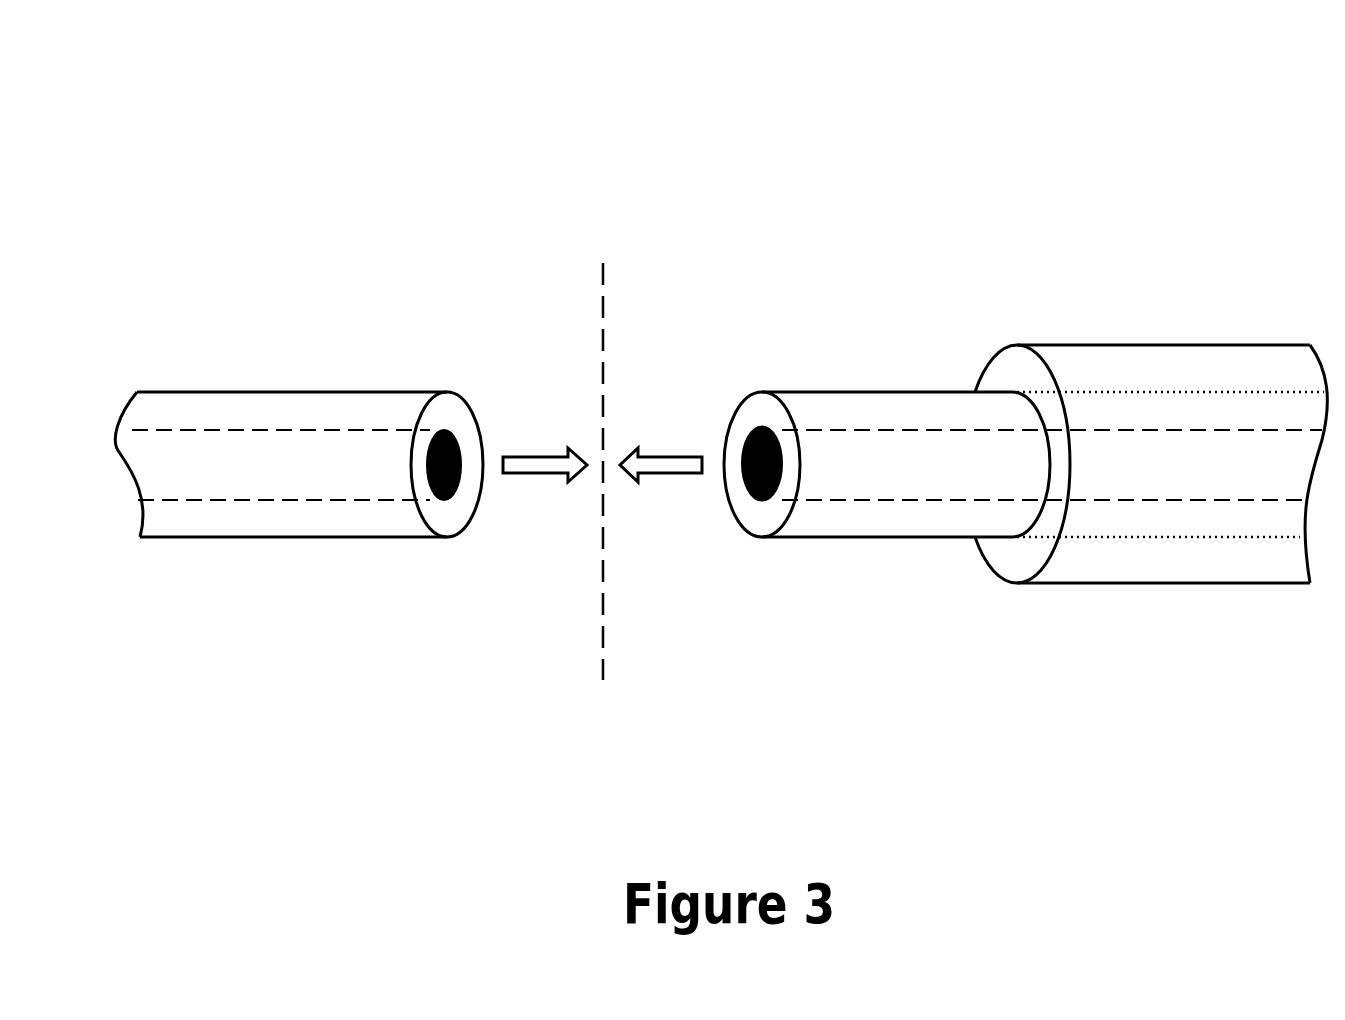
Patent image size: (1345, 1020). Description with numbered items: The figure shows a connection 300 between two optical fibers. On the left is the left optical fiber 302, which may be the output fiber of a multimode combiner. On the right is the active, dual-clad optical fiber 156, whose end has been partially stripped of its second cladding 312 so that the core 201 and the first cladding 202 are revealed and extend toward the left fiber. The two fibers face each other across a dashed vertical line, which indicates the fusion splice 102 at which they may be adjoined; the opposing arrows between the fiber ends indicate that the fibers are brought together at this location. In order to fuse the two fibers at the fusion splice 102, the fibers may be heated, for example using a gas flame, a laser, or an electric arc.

The connection 300 is at (216, 41).
The fusion splice 102 is at (600, 249).
The left optical fiber 302 is at (343, 375).
The first cladding 202 is at (735, 540).
The core 201 is at (731, 436).
The second cladding 312 is at (981, 576).
The active, dual-clad optical fiber 156 is at (1160, 335).